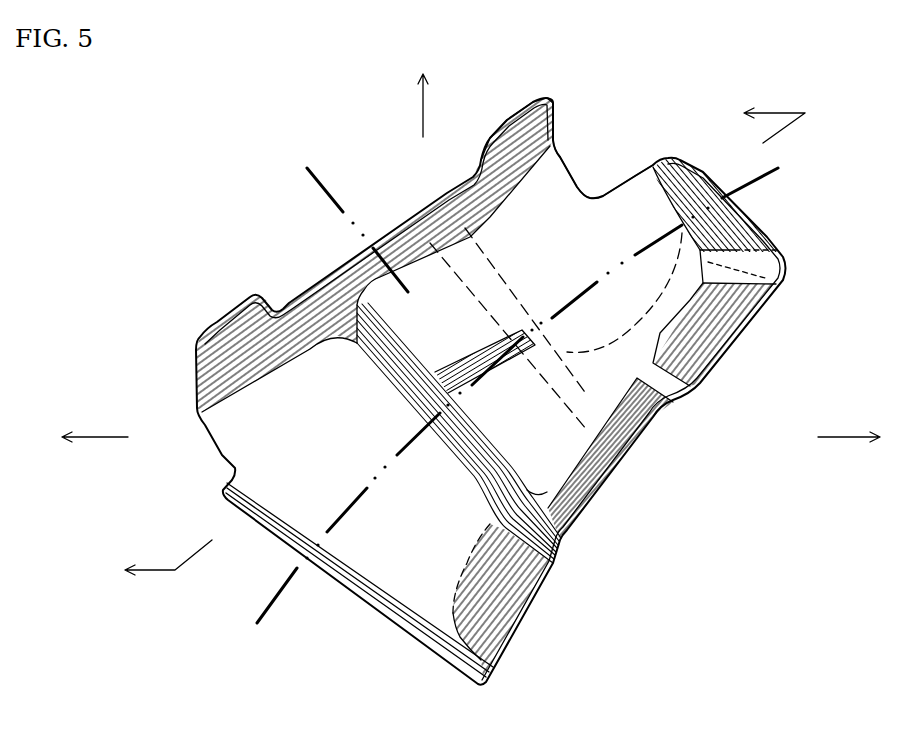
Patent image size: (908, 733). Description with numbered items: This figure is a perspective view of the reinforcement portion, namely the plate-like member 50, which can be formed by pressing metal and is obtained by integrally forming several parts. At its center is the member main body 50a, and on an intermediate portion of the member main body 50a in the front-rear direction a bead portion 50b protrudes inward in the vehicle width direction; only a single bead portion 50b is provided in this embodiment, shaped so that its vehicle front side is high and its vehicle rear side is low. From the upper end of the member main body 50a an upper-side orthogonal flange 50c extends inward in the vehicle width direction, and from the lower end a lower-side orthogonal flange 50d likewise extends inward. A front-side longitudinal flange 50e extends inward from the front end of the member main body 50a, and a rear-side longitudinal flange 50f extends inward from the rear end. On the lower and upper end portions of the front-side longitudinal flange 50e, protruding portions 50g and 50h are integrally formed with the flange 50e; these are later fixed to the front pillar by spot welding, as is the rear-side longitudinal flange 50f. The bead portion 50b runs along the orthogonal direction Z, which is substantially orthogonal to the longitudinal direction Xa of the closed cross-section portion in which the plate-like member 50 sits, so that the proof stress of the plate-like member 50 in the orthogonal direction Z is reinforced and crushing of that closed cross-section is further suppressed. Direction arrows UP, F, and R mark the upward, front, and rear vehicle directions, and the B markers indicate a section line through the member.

The plate-like member 50 is at (278, 266).
The member main body 50a is at (563, 240).
The bead portion 50b is at (423, 352).
The upper-side orthogonal flange 50c is at (710, 180).
The lower-side orthogonal flange 50d is at (343, 570).
The front-side longitudinal flange 50e is at (400, 227).
The rear-side longitudinal flange 50f is at (617, 470).
The protruding portion 50g is at (222, 328).
The protruding portion 50h is at (520, 127).
The orthogonal direction Z is at (318, 186).
The longitudinal direction Xa is at (773, 172).
The up direction UP is at (424, 92).
The front direction F is at (85, 438).
The rear direction R is at (858, 438).
The section line B is at (454, 343).